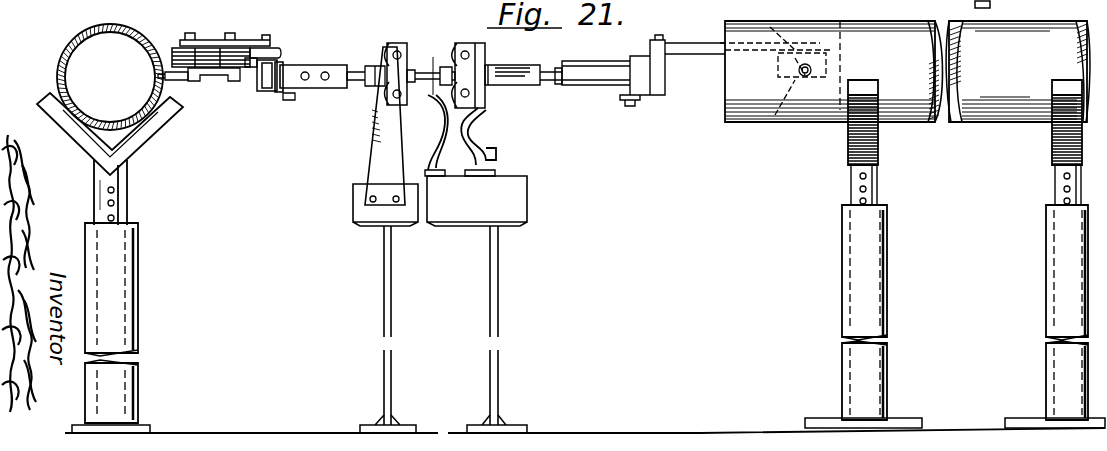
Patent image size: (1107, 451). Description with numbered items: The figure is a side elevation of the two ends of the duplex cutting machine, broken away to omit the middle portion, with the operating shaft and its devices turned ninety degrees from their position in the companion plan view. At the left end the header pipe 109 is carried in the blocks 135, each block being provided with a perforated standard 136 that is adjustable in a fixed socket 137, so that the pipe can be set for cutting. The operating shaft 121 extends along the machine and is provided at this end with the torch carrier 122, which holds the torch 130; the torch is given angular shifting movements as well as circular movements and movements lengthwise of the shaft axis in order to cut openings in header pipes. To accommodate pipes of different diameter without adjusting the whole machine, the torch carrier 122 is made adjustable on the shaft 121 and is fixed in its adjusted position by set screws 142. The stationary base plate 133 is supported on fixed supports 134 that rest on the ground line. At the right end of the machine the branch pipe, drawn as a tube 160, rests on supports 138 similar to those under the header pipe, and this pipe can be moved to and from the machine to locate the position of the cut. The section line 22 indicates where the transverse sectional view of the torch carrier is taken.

The header pipe 109 is at (58, 70).
The blocks 135 is at (52, 101).
The perforated standards 136 is at (128, 202).
The fixed sockets 137 is at (139, 290).
The torch 130 is at (168, 75).
The torch carrier 122 is at (283, 98).
The section line 22 is at (344, 119).
The operating shaft 121 is at (438, 52).
The base plate 133 is at (426, 206).
The fixed supports 134 is at (392, 315).
The tube 160 is at (890, 8).
The set screws 142 is at (990, 5).
The supports 138 is at (870, 243).